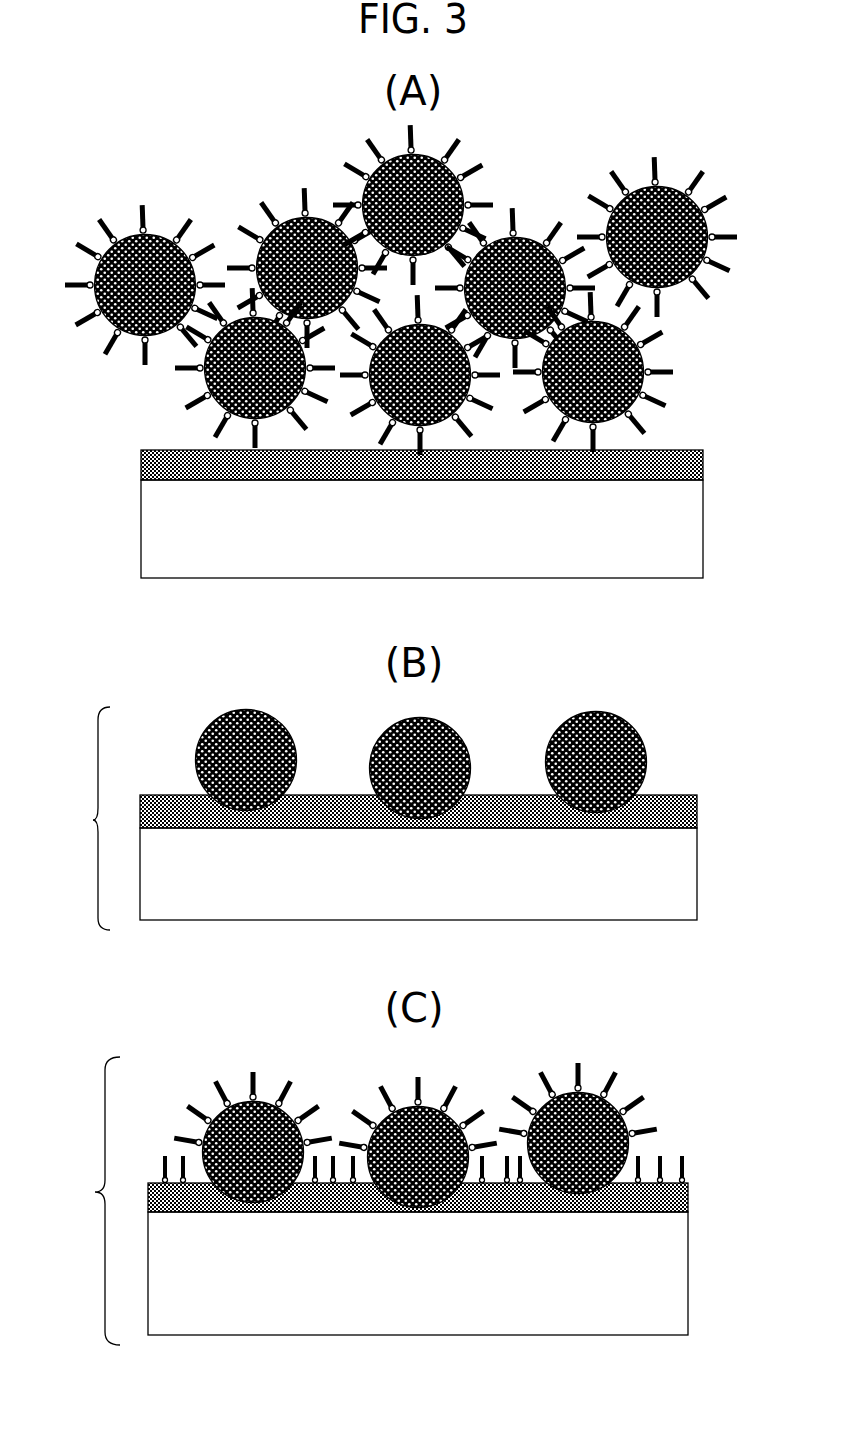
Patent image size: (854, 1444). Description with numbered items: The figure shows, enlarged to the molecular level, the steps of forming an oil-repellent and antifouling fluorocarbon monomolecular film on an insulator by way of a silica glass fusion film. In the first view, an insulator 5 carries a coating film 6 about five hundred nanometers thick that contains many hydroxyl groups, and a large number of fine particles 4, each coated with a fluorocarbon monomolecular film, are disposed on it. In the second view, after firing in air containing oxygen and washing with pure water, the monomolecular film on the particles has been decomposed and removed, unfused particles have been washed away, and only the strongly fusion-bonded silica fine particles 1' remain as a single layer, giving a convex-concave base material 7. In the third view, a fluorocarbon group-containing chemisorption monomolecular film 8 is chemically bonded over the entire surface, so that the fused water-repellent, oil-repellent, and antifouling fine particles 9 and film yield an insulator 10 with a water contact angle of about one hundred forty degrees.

The fine particles coated with a monomolecular film 4 is at (655, 383).
The insulator 5 is at (703, 527).
The coating film 6 is at (703, 462).
The convex-concave base material 7 is at (89, 833).
The silica fine particles 1' is at (458, 959).
The fluorocarbon group-containing chemisorption monomolecular film 8 is at (632, 1090).
The fused water-repellent, oil-repellent, and antifouling fine particles 9 is at (236, 1094).
The insulator 10 is at (90, 1204).